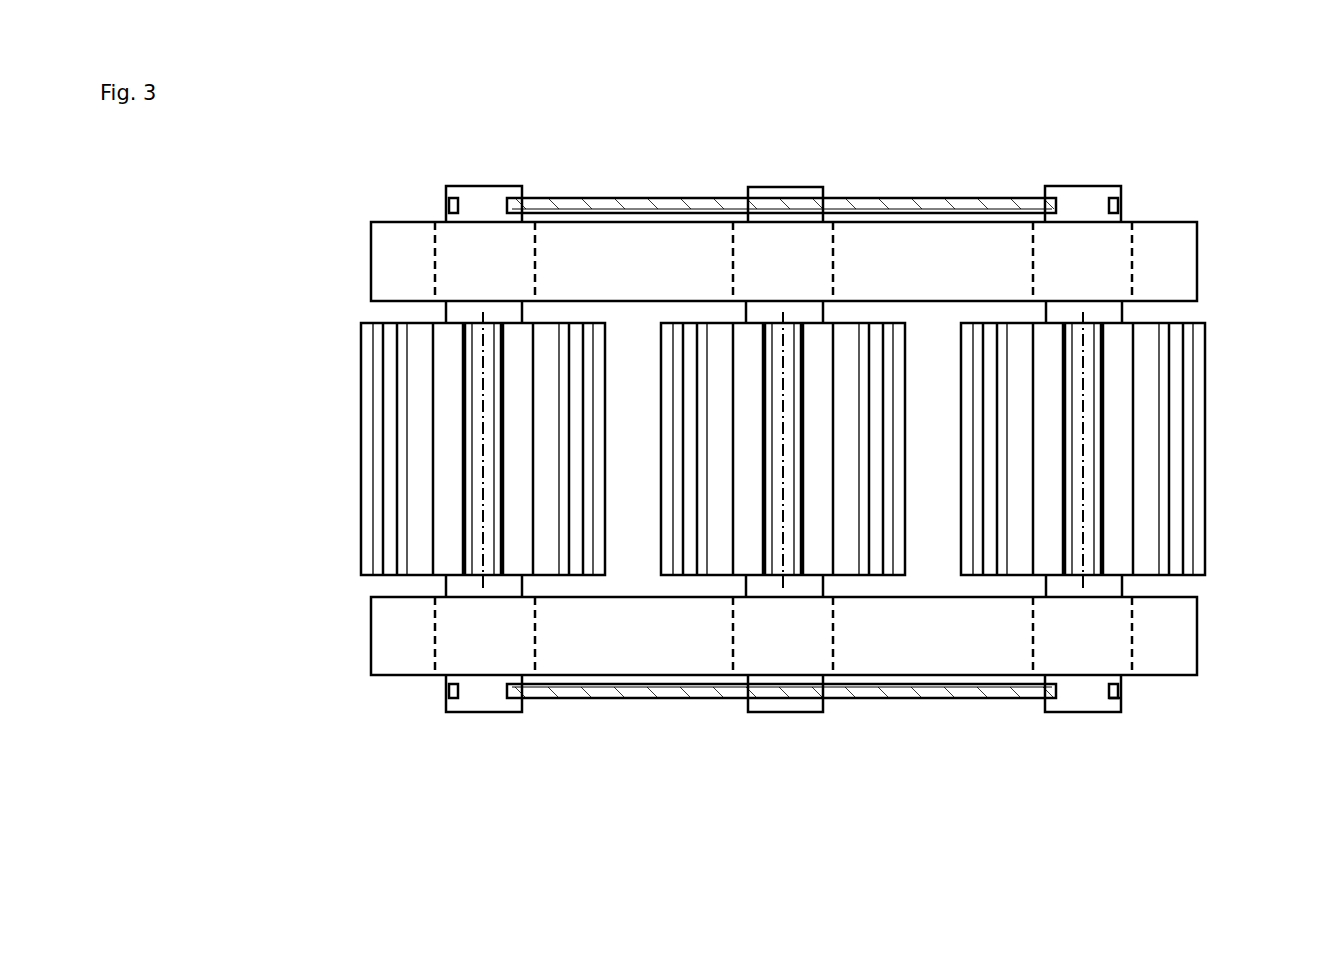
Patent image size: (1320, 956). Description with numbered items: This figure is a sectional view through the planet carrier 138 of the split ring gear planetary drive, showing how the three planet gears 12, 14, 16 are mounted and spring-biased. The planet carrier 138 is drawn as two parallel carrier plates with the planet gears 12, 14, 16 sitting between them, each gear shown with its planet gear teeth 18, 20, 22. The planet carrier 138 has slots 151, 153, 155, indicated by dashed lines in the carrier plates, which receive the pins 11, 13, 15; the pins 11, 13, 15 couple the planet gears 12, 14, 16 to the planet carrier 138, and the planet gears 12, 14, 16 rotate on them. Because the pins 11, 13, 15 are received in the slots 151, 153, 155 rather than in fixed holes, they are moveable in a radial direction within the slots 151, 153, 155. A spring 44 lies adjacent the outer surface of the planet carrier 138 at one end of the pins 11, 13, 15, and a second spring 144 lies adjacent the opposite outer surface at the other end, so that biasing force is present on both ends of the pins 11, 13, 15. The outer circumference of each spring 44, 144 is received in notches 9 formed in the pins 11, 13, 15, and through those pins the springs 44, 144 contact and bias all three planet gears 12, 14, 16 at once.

The planet carrier 138 is at (1195, 262).
The spring 44 is at (637, 200).
The second spring 144 is at (628, 697).
The planet gear 12 is at (360, 342).
The planet gear teeth 18 is at (370, 448).
The planet gear 14 is at (907, 333).
The planet gear teeth 20 is at (680, 355).
The planet gear 16 is at (1205, 498).
The planet gear teeth 22 is at (1195, 363).
The slot 151 is at (433, 641).
The slot 153 is at (832, 630).
The slot 155 is at (1132, 648).
The pin 11 is at (483, 711).
The pin 13 is at (797, 705).
The pin 15 is at (1078, 708).
The notch 9 is at (1121, 697).